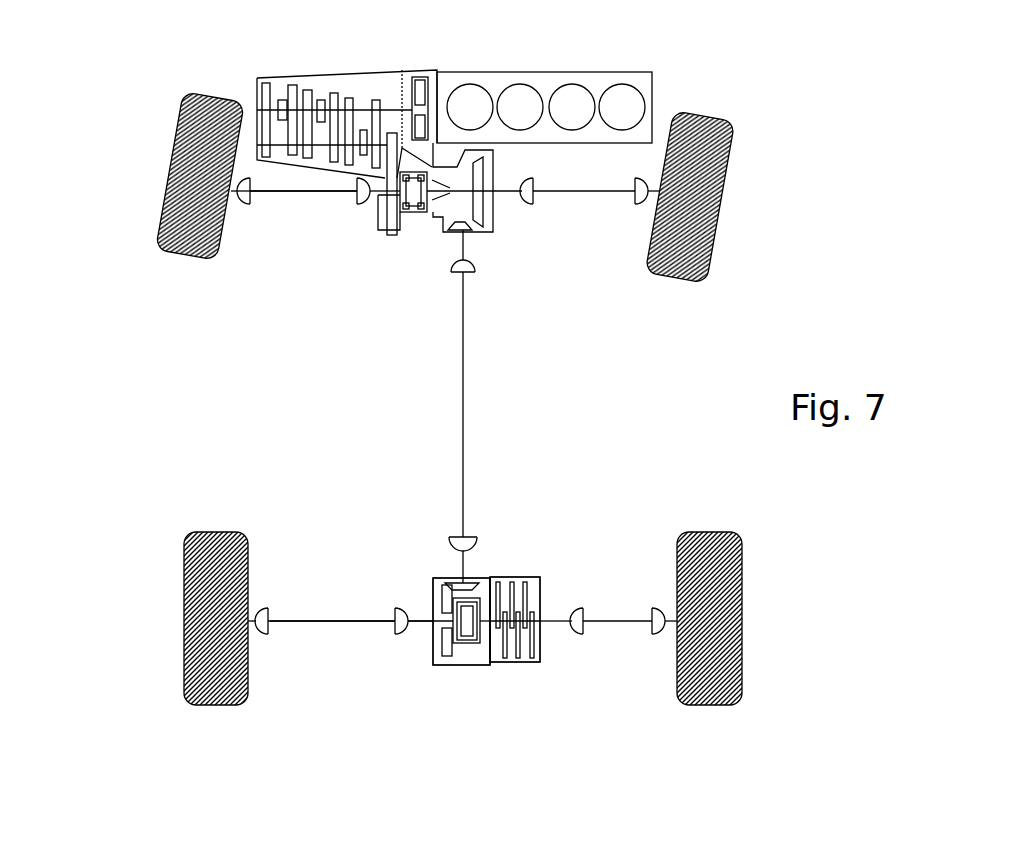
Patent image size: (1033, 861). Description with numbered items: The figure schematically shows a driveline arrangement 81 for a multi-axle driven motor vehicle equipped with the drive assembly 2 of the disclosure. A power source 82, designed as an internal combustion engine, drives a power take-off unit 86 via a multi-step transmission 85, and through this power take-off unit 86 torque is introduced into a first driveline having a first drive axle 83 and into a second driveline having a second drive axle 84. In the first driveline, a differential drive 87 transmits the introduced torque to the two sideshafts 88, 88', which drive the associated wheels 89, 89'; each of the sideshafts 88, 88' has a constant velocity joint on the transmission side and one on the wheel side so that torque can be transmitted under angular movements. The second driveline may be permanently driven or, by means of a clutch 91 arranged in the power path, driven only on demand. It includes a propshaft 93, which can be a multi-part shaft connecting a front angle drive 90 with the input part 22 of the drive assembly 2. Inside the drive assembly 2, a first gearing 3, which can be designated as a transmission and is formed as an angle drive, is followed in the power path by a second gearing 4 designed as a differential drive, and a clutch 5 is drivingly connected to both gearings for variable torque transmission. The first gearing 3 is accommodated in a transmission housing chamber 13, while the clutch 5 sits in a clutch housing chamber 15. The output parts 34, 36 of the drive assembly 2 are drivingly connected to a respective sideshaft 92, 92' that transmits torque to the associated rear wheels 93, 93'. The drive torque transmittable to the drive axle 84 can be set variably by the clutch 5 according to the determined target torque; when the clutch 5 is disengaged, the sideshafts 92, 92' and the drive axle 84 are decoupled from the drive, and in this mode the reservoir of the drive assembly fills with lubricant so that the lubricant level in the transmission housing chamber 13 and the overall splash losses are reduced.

The driveline arrangement 81 is at (122, 415).
The power source 82 is at (553, 72).
The first drive axle 83 is at (136, 150).
The second drive axle 84 is at (126, 614).
The multi-step transmission 85 is at (352, 73).
The power take-off unit 86 is at (411, 225).
The differential drive 87 is at (400, 210).
The sideshaft 88 is at (543, 216).
The sideshaft 88' is at (315, 223).
The wheel 89 is at (721, 197).
The wheel 89' is at (185, 167).
The front angle drive 90 is at (498, 232).
The clutch 91 is at (449, 209).
The sideshaft 92 is at (608, 584).
The sideshaft 92' is at (340, 583).
The propshaft 93 is at (631, 482).
The wheel 93' is at (174, 624).
The drive assembly 2 is at (530, 560).
The first gearing 3 is at (424, 580).
The input part 22 is at (465, 558).
The output part 34 is at (410, 627).
The transmission housing chamber 13 is at (452, 658).
The second gearing 4 is at (467, 650).
The output part 36 is at (550, 620).
The clutch 5 is at (513, 660).
The clutch housing chamber 15 is at (532, 662).